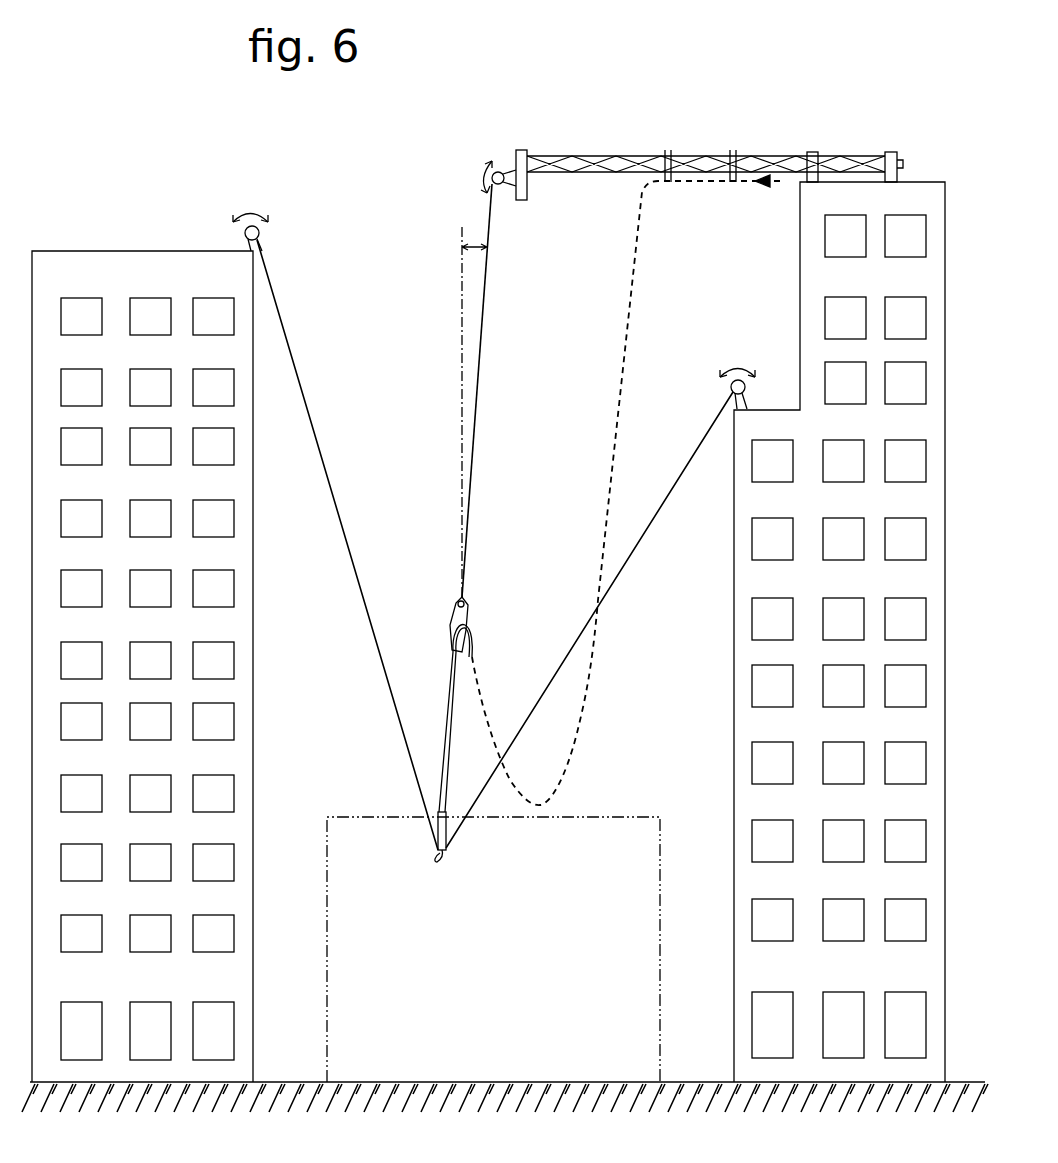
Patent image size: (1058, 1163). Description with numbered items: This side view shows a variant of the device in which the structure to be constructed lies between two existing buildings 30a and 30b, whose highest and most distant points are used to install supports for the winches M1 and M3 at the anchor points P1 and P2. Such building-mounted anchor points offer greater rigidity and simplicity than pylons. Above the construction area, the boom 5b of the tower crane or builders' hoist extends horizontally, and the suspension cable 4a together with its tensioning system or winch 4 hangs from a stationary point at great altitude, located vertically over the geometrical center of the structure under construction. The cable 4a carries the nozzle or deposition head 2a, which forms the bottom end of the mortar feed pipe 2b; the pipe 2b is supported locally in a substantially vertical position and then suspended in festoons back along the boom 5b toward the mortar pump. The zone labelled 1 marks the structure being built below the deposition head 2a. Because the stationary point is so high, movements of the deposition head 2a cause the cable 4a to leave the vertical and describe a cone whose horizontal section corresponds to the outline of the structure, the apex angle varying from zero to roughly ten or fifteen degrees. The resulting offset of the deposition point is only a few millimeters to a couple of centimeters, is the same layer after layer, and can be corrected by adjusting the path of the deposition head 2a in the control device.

The working area / load position 1 is at (336, 808).
The nozzle 2a is at (437, 856).
The mortar feed pipe 2b is at (597, 672).
The winch 4 is at (503, 171).
The suspension cable 4a is at (481, 353).
The boom 5b is at (523, 148).
The building 30a is at (138, 251).
The building 30b is at (908, 182).
The winch M1 is at (245, 233).
The winch M3 is at (731, 385).
The pylon P1 is at (246, 250).
The pylon P2 is at (733, 409).